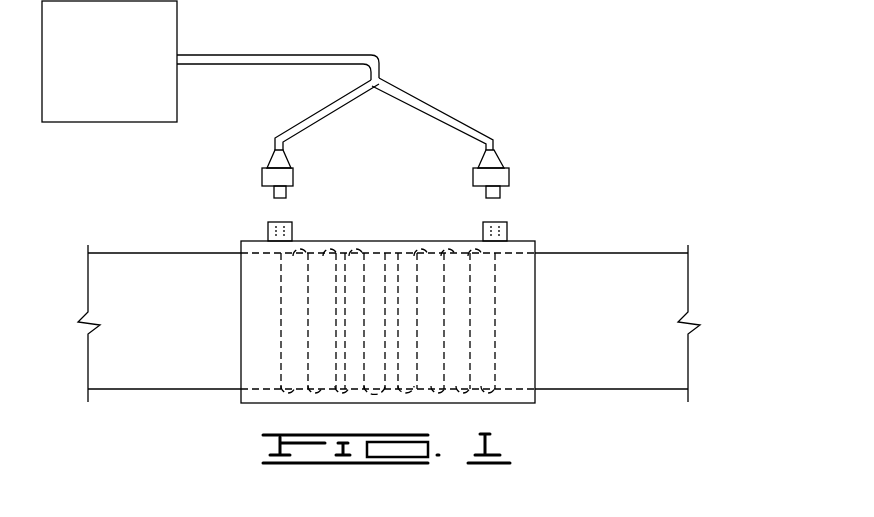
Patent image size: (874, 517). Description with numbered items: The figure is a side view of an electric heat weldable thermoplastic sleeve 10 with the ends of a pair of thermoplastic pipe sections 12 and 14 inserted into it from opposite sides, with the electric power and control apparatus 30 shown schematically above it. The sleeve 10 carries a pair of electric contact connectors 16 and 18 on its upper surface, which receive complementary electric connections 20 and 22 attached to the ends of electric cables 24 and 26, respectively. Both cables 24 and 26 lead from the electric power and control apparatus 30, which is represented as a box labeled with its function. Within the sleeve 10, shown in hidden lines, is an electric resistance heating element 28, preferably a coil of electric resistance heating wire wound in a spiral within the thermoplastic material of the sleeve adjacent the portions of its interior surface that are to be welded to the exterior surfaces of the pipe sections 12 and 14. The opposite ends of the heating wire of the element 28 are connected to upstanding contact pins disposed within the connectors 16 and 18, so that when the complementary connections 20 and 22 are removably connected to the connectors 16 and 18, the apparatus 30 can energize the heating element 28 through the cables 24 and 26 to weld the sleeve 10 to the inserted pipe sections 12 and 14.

The electric heat weldable thermoplastic sleeve 10 is at (538, 235).
The thermoplastic pipe section 12 is at (612, 260).
The thermoplastic pipe section 14 is at (177, 266).
The electric contact connector 16 is at (291, 220).
The electric contact connector 18 is at (481, 221).
The complementary electric connection 20 is at (295, 172).
The complementary electric connection 22 is at (511, 172).
The electric cable 24 is at (339, 107).
The electric cable 26 is at (433, 105).
The electric resistance heating element 28 is at (337, 290).
The electric power and control apparatus 30 is at (181, 22).